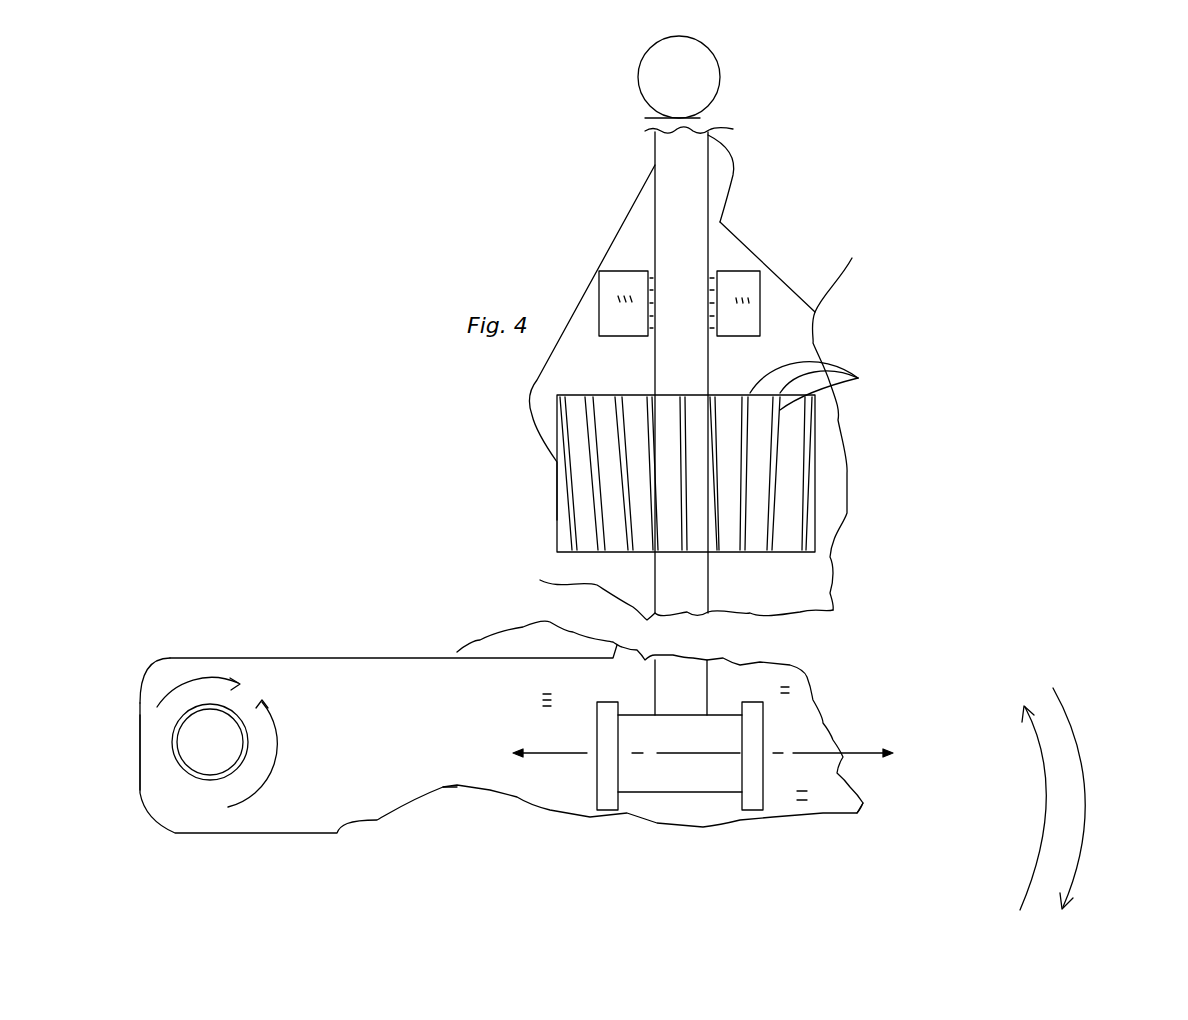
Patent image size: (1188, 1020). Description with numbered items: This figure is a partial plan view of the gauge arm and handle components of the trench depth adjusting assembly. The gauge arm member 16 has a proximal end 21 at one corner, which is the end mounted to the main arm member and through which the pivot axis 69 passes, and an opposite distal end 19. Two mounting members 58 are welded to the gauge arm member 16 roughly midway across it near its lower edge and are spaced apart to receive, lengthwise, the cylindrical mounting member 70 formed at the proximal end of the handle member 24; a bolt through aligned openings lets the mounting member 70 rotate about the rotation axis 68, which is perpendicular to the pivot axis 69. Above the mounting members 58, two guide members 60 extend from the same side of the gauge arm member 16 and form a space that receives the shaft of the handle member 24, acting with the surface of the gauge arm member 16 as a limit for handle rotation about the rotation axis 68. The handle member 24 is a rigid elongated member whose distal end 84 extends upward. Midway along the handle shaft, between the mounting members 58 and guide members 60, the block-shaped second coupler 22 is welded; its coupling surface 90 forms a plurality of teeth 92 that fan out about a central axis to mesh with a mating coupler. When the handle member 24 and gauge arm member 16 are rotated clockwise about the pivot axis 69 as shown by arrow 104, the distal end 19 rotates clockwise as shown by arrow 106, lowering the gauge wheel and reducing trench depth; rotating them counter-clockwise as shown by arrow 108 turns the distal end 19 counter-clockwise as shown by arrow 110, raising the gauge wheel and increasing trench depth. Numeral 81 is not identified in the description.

The distal end 84 is at (707, 110).
The handle member 24 is at (693, 222).
The guide members 60 is at (615, 276).
The second coupler 22 is at (557, 527).
The teeth 92 is at (742, 403).
The coupling surface 90 is at (790, 526).
The proximal end 21 is at (187, 658).
The arrow 104 is at (150, 717).
The pivot axis 69 is at (205, 736).
The arrow 108 is at (268, 778).
The lower shaft portion 81 is at (702, 702).
The cylindrical mounting member 70 is at (667, 773).
The mounting members 58 is at (608, 803).
The rotation axis 68 is at (863, 750).
The gauge arm member 16 is at (798, 803).
The distal end 19 is at (860, 807).
The arrow 106 is at (1090, 833).
The arrow 110 is at (1038, 852).